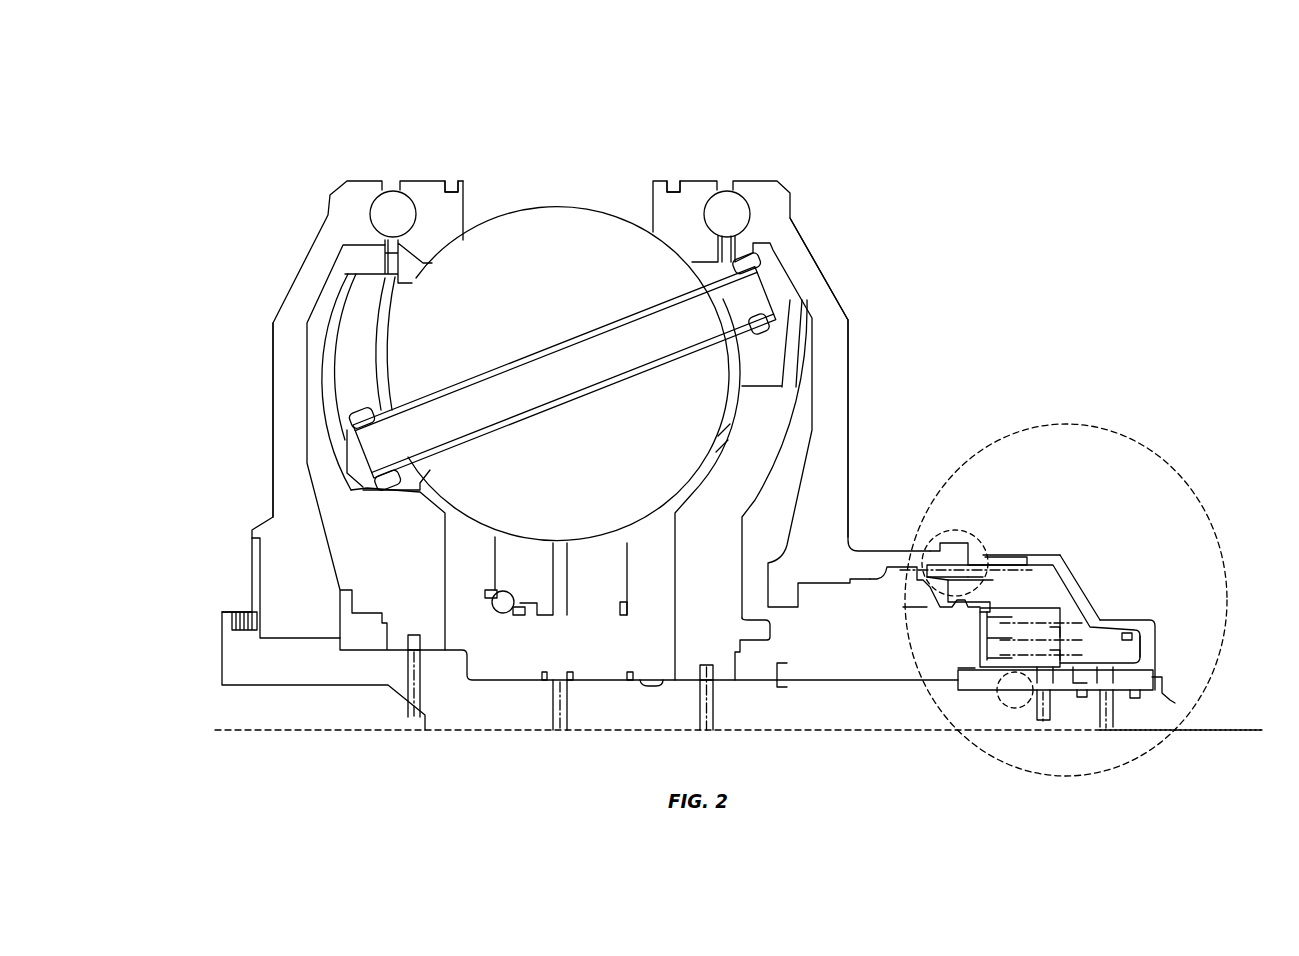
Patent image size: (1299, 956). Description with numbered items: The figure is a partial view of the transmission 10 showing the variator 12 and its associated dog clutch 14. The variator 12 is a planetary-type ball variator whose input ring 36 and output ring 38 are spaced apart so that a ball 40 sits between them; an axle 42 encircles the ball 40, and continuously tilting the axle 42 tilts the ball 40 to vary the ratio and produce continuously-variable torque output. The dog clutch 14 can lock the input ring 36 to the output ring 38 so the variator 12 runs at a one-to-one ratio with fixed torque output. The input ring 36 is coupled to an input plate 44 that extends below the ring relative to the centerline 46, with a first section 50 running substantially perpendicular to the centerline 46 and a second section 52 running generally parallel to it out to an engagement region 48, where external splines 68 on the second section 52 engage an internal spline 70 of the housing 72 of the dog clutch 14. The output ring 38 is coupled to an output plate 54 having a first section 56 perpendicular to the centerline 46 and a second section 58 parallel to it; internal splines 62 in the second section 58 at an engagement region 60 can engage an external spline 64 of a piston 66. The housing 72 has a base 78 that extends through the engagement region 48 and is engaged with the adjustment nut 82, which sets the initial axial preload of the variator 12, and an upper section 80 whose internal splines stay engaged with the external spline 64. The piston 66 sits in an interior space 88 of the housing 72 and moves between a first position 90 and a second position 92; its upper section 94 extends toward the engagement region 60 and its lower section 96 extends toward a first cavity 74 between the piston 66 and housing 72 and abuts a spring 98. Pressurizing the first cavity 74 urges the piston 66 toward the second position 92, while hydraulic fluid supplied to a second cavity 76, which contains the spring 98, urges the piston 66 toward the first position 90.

The transmission 10 is at (927, 136).
The variator 12 is at (247, 215).
The dog clutch 14 is at (952, 487).
The input ring 36 is at (430, 192).
The output ring 38 is at (679, 212).
The ball 40 is at (543, 220).
The axle 42 is at (548, 383).
The input plate 44 is at (302, 284).
The centerline 46 is at (1213, 727).
The engagement region 48 is at (1017, 723).
The first section 50 is at (280, 427).
The second section 52 is at (660, 712).
The output plate 54 is at (847, 288).
The first section 56 is at (835, 383).
The second section 58 is at (897, 560).
The engagement region 60 is at (977, 537).
The internal splines 62 is at (932, 550).
The external spline 64 is at (1003, 565).
The piston 66 is at (1080, 607).
The external splines 68 is at (987, 692).
The internal spline 70 is at (1020, 692).
The housing 72 is at (1097, 613).
The first cavity 74 is at (1123, 673).
The second cavity 76 is at (987, 615).
The base 78 is at (977, 683).
The upper section 80 is at (1117, 653).
The adjustment nut 82 is at (960, 667).
The interior space 88 is at (1033, 610).
The first position 90 is at (952, 607).
The second position 92 is at (903, 607).
The upper section 94 is at (995, 593).
The lower section 96 is at (1150, 640).
The spring 98 is at (1060, 663).